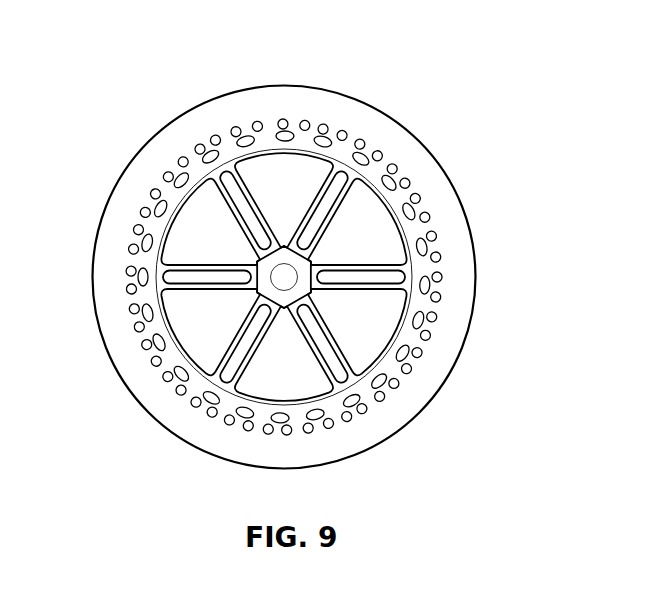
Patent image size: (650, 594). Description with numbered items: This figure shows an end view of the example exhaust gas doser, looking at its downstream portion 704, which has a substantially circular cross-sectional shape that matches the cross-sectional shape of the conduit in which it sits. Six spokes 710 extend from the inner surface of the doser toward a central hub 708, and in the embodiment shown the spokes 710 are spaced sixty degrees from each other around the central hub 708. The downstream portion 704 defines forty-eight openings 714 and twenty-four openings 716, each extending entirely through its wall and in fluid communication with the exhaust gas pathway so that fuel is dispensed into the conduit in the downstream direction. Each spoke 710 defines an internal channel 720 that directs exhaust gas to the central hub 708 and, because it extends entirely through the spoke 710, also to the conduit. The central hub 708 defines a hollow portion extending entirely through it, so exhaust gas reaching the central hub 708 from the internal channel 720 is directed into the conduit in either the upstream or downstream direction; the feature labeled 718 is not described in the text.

The downstream portion 704 is at (270, 100).
The central hub 708 is at (306, 262).
The spokes 710 is at (412, 262).
The openings 714 is at (342, 133).
The openings 716 is at (437, 243).
The central bore 718 is at (280, 277).
The internal channel 720 is at (197, 277).